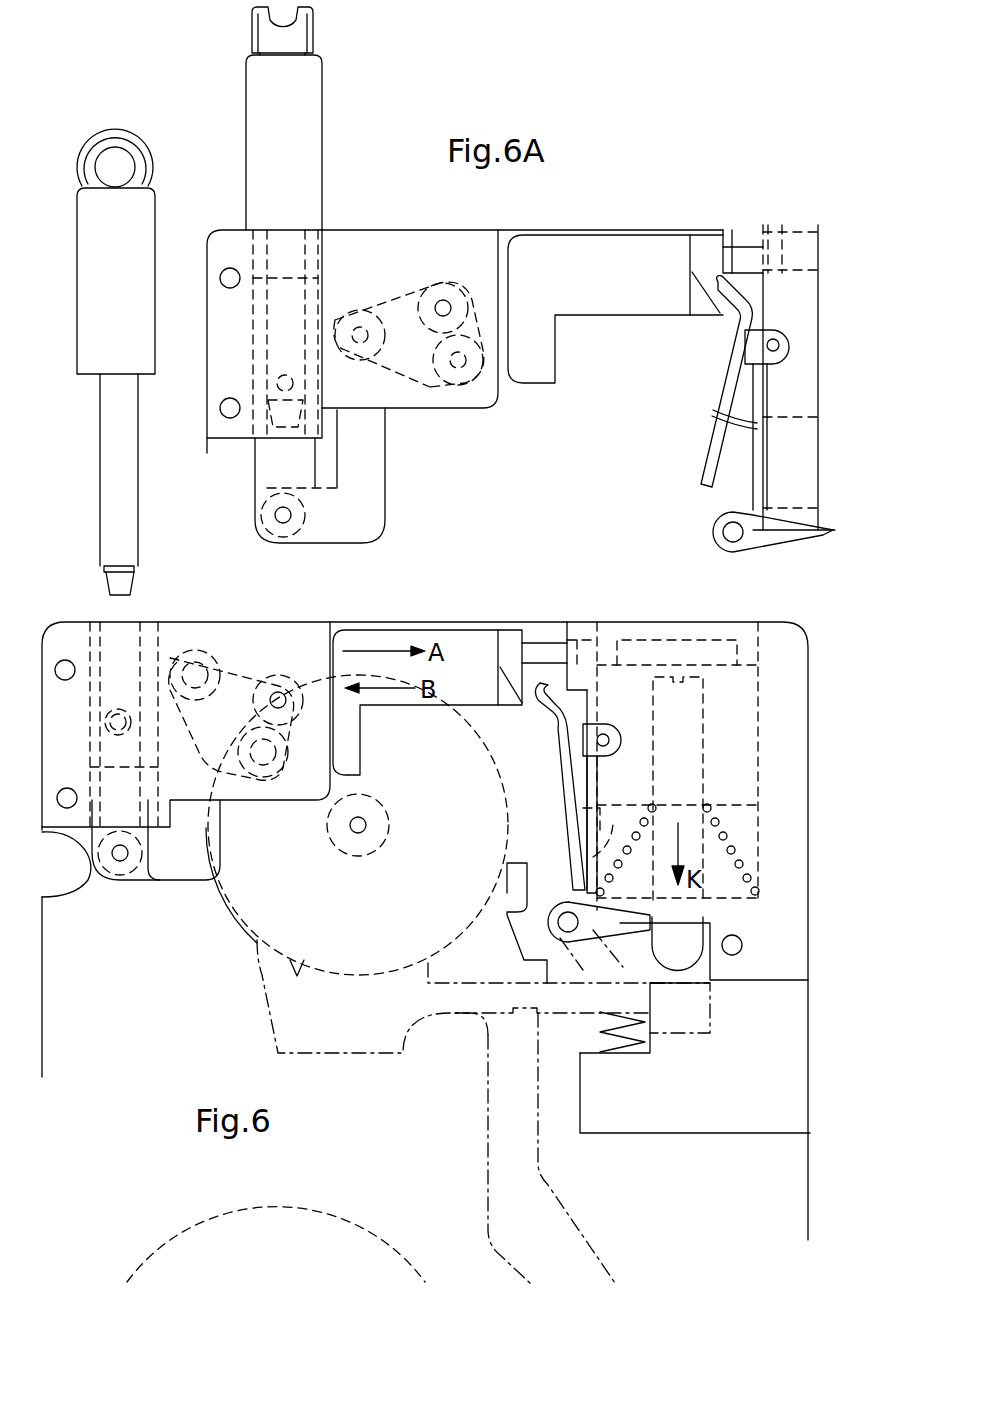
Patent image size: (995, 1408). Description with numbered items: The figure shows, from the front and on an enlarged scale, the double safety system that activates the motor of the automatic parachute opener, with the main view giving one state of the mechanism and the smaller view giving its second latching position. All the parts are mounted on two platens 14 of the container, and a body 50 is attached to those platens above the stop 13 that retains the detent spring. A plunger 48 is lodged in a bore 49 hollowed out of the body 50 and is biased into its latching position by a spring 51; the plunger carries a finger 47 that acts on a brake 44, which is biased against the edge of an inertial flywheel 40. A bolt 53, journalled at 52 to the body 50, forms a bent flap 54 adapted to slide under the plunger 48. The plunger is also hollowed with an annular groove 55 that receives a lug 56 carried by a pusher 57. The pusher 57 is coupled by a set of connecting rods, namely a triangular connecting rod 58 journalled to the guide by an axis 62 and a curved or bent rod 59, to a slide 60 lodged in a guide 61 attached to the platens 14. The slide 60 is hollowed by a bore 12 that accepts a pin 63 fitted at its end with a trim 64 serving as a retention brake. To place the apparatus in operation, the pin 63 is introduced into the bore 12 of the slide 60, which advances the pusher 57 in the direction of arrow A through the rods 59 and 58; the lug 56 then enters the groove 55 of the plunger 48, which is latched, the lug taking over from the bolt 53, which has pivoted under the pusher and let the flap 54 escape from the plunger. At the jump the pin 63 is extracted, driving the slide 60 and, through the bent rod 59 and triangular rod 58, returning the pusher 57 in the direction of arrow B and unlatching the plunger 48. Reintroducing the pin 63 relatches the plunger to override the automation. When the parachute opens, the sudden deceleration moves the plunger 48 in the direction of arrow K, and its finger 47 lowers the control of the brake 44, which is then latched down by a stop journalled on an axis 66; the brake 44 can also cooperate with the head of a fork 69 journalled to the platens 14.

In FIG. 6, the bore 12 is at (125, 620).
In FIG. 6, the stop 13 is at (727, 1120).
In FIG. 6, the platens 14 is at (47, 1020).
In FIG. 6, the inertial flywheel 40 is at (260, 938).
In FIG. 6, the brake 44 is at (367, 1053).
In FIG. 6, the finger 47 is at (688, 945).
In FIG. 6, the plunger 48 is at (733, 755).
In FIG. 6, the bore 49 is at (760, 825).
In FIG. 6, the body 50 is at (782, 667).
In FIG. 6, the spring 51 is at (737, 847).
In FIG. 6, the journal 52 is at (587, 757).
In FIG. 6A, the bolt 53 is at (725, 318).
In FIG. 6, the bolt 53 is at (550, 707).
In FIG. 6A, the bent flap 54 is at (742, 422).
In FIG. 6, the bent flap 54 is at (583, 860).
In FIG. 6, the annular groove 55 is at (643, 653).
In FIG. 6A, the lug 56 is at (728, 228).
In FIG. 6, the lug 56 is at (545, 653).
In FIG. 6A, the pusher 57 is at (607, 285).
In FIG. 6, the pusher 57 is at (448, 655).
In FIG. 6A, the triangular connecting rod 58 is at (437, 415).
In FIG. 6, the triangular connecting rod 58 is at (230, 657).
In FIG. 6A, the bent connecting rod 59 is at (370, 463).
In FIG. 6, the bent connecting rod 59 is at (180, 860).
In FIG. 6A, the slide 60 is at (300, 525).
In FIG. 6, the slide 60 is at (140, 865).
In FIG. 6, the guide 61 is at (59, 768).
In FIG. 6, the axis 62 is at (277, 697).
In FIG. 6A, the pin 63 is at (305, 160).
In FIG. 6A, the trim 64 is at (137, 569).
In FIG. 6, the axis 66 is at (560, 923).
In FIG. 6, the fork 69 is at (487, 1177).